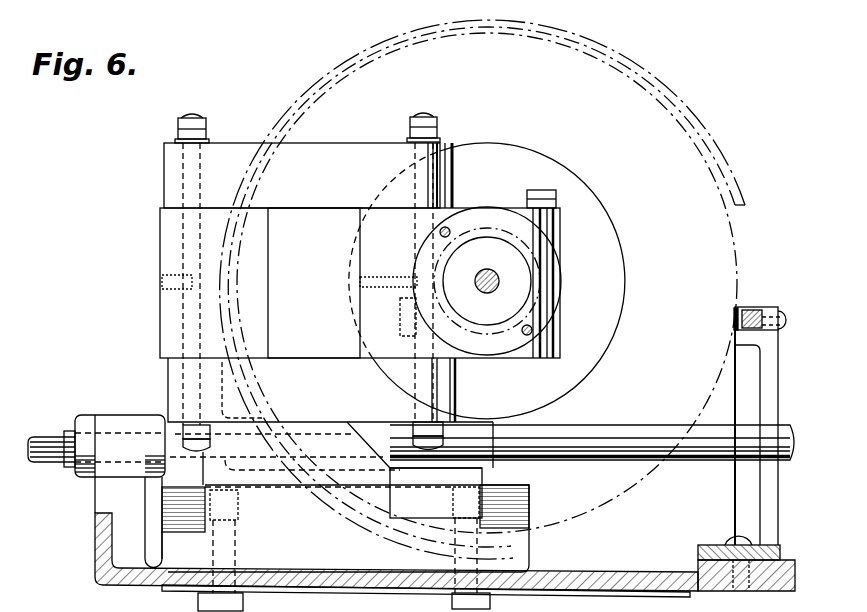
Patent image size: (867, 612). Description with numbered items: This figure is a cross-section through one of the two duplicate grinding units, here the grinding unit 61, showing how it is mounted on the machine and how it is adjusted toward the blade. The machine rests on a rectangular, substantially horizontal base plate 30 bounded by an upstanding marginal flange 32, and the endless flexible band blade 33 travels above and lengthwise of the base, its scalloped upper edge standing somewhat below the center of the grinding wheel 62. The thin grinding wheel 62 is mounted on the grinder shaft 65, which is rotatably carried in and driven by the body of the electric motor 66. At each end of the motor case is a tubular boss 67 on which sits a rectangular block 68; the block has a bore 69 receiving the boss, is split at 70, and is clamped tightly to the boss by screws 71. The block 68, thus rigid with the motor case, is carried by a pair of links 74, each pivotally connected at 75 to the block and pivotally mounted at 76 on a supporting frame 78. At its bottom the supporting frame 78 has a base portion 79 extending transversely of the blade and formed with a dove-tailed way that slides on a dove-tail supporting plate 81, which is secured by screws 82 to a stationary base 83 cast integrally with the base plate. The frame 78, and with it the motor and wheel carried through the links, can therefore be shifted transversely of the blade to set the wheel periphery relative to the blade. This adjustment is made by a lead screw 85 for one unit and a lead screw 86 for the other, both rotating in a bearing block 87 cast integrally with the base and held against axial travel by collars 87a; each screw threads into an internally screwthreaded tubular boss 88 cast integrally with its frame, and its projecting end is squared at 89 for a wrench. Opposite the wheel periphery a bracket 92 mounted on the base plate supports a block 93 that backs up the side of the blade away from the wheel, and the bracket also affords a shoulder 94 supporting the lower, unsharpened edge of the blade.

The base plate 30 is at (688, 580).
The marginal flange 32 is at (105, 540).
The blade 33 is at (742, 306).
The grinding unit 61 is at (262, 105).
The grinding wheel 62 is at (735, 220).
The grinder shaft 65 is at (487, 272).
The electric motor 66 is at (583, 206).
The tubular boss 67 is at (487, 232).
The rectangular block 68 is at (360, 229).
The bore 69 is at (482, 337).
The split 70 is at (545, 272).
The screws 71 is at (562, 195).
The links 74 is at (334, 150).
The pivotal connection 75 is at (440, 142).
The pivotal mounting 76 is at (190, 176).
The supporting frame 78 is at (170, 246).
The base portion 79 is at (492, 472).
The dove-tail supporting plate 81 is at (527, 504).
The screws 82 is at (245, 605).
The stationary base 83 is at (520, 546).
The lead screw 85 is at (70, 440).
The lead screw 86 is at (70, 430).
The bearing block 87 is at (100, 493).
The collars 87a is at (155, 416).
The tubular boss 88 is at (232, 408).
The squared end 89 is at (29, 461).
The bracket 92 is at (745, 490).
The block 93 is at (752, 316).
The shoulder 94 is at (735, 325).